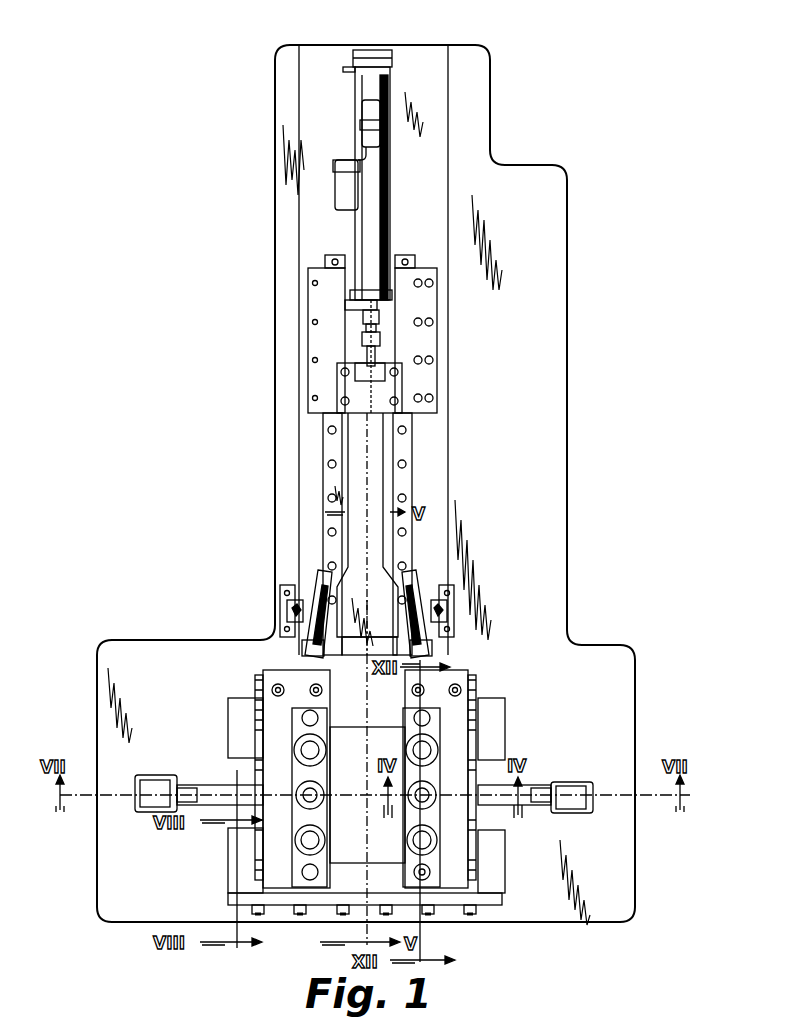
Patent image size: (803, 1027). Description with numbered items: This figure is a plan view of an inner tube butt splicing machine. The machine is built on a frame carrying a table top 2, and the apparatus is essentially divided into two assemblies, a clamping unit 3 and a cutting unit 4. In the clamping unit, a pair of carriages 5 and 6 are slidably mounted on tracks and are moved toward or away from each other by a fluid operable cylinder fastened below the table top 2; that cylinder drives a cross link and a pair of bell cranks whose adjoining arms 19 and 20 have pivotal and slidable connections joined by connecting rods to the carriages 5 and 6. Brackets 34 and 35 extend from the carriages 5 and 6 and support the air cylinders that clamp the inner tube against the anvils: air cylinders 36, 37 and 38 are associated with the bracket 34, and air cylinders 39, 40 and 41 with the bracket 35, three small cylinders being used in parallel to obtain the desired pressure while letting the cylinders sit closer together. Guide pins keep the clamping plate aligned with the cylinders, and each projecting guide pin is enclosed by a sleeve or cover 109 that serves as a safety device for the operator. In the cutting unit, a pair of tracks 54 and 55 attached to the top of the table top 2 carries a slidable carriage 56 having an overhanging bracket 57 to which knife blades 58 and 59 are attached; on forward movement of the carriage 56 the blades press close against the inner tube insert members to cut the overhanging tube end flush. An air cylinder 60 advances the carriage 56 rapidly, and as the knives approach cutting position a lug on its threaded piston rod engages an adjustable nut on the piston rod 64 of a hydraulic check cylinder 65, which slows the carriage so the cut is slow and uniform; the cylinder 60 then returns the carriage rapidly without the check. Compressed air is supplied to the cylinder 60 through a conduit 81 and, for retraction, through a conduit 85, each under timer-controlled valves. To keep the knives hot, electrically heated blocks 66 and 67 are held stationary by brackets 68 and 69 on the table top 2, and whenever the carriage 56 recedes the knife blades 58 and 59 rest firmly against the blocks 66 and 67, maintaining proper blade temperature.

The table top 2 is at (110, 893).
The clamping unit 3 is at (520, 713).
The cutting unit 4 is at (445, 372).
The carriage 5 is at (248, 863).
The carriage 6 is at (490, 876).
The arm 19 is at (135, 790).
The arm 20 is at (595, 808).
The bracket 34 is at (262, 737).
The bracket 35 is at (473, 738).
The air cylinder 36 is at (262, 845).
The air cylinder 37 is at (263, 784).
The air cylinder 38 is at (258, 718).
The air cylinder 39 is at (470, 850).
The air cylinder 40 is at (447, 775).
The air cylinder 41 is at (472, 706).
The track 54 is at (330, 448).
The track 55 is at (405, 446).
The carriage 56 is at (315, 335).
The overhanging bracket 57 is at (375, 492).
The knife blade 58 is at (312, 656).
The knife blade 59 is at (425, 656).
The air cylinder 60 is at (388, 80).
The piston rod 64 is at (378, 350).
The hydraulic check cylinder 65 is at (370, 222).
The electrically heated block 66 is at (330, 582).
The electrically heated block 67 is at (420, 574).
The bracket 68 is at (283, 598).
The bracket 69 is at (455, 612).
The conduit 81 is at (345, 68).
The conduit 85 is at (350, 292).
The sleeve or cover 109 is at (425, 880).